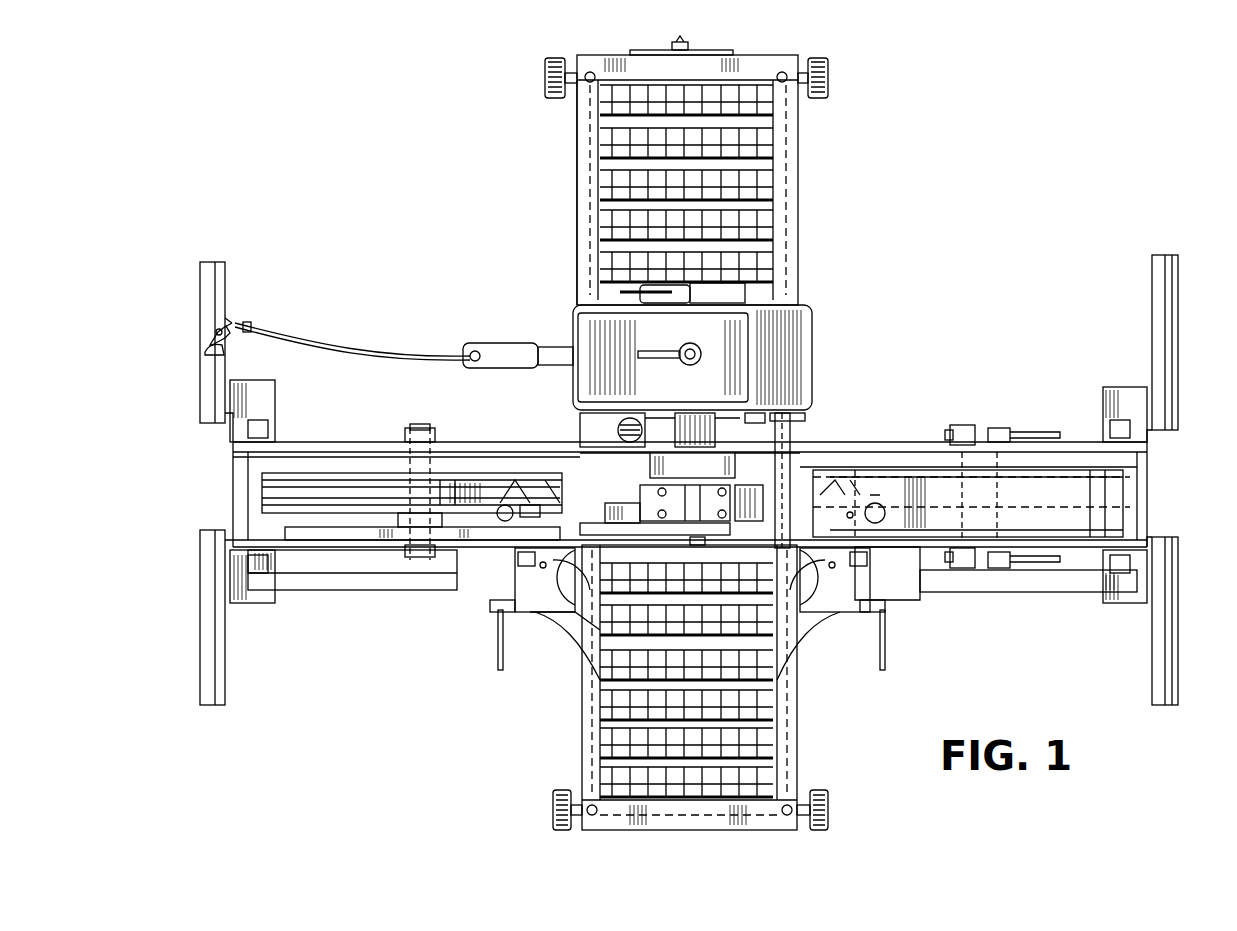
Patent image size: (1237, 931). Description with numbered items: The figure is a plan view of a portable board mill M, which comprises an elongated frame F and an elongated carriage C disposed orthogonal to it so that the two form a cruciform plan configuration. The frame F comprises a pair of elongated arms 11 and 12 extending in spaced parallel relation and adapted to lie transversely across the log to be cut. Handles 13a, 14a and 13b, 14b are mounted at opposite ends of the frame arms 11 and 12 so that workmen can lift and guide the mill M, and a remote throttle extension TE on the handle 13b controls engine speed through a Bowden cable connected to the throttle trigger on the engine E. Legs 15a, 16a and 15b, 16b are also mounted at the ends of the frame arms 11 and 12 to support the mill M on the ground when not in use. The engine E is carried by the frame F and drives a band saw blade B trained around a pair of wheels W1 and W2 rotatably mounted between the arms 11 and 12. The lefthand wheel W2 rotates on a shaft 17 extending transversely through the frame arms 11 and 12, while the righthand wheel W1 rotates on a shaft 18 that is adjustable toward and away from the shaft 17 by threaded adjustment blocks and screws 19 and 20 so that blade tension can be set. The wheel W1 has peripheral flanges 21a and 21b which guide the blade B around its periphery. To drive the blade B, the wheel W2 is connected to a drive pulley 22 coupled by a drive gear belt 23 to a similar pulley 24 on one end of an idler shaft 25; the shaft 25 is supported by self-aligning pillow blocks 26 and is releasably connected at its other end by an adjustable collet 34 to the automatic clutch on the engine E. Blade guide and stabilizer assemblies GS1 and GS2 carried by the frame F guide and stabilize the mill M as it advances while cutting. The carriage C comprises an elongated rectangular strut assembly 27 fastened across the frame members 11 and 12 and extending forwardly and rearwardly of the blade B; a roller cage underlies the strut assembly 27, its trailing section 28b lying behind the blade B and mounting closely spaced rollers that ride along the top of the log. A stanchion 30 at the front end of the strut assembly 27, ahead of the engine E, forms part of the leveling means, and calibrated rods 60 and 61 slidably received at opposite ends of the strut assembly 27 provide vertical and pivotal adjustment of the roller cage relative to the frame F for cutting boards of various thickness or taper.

The carriage C is at (790, 252).
The strut assembly 27 is at (588, 245).
The stanchion 30 is at (728, 50).
The rod 60 is at (585, 82).
The rod 61 is at (787, 80).
The engine E is at (805, 342).
The remote throttle extension TE is at (195, 358).
The handle 13b is at (210, 298).
The handle 14b is at (210, 635).
The handle 13a is at (1170, 302).
The handle 14a is at (1172, 640).
The frame F is at (893, 445).
The frame arm 11 is at (480, 450).
The leg 15b is at (265, 408).
The leg 16b is at (260, 575).
The leg 15a is at (1105, 422).
The leg 16a is at (1128, 595).
The band saw blade B is at (318, 485).
The lefthand blade drive wheel W2 is at (265, 515).
The shaft 17 is at (418, 428).
The drive pulley 22 is at (405, 545).
The drive gear belt 23 is at (453, 540).
The frame arm 12 is at (330, 573).
The righthand blade drive wheel W1 is at (1125, 495).
The peripheral flange 21a is at (1125, 478).
The peripheral flange 21b is at (1125, 508).
The shaft 18 is at (962, 400).
The adjustment block and screw 19 is at (997, 428).
The adjustment block and screw 20 is at (997, 570).
The self-aligning pillow block 26 is at (660, 490).
The adjustable collet 34 is at (730, 490).
The idler shaft 25 is at (765, 495).
The pulley 24 is at (712, 528).
The trailing section of cage 28b is at (790, 740).
The blade guide and stabilizer assembly GS2 is at (548, 605).
The blade guide and stabilizer assembly GS1 is at (850, 605).
The portable board mill M is at (915, 297).